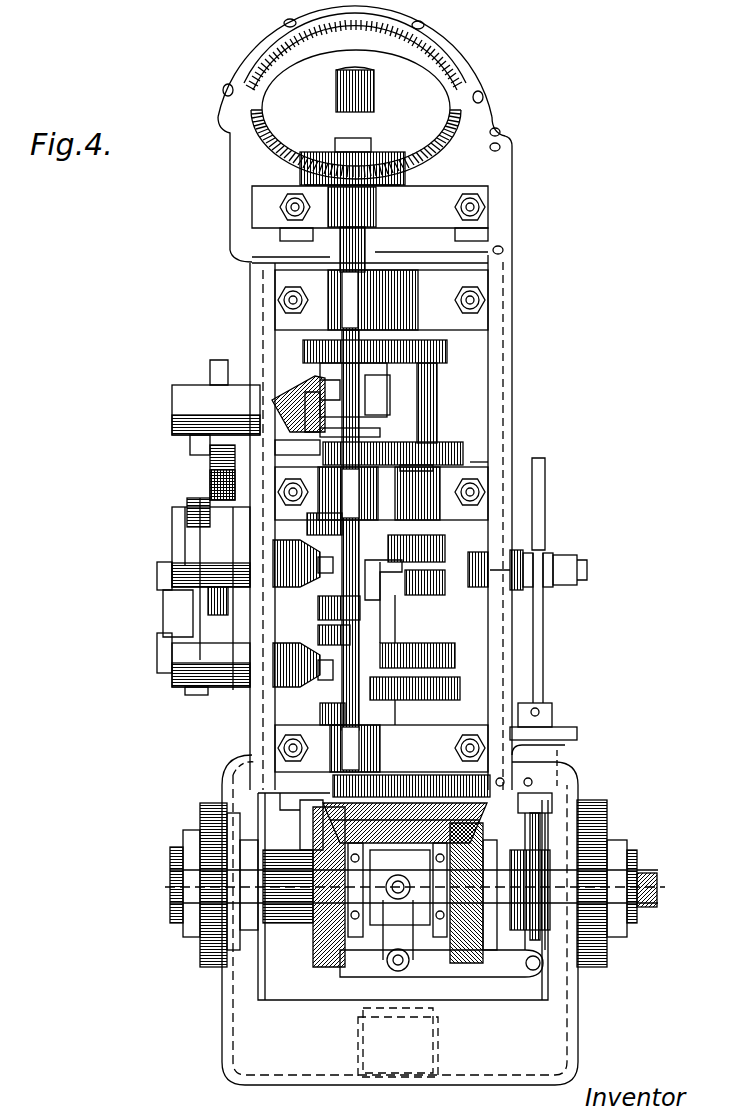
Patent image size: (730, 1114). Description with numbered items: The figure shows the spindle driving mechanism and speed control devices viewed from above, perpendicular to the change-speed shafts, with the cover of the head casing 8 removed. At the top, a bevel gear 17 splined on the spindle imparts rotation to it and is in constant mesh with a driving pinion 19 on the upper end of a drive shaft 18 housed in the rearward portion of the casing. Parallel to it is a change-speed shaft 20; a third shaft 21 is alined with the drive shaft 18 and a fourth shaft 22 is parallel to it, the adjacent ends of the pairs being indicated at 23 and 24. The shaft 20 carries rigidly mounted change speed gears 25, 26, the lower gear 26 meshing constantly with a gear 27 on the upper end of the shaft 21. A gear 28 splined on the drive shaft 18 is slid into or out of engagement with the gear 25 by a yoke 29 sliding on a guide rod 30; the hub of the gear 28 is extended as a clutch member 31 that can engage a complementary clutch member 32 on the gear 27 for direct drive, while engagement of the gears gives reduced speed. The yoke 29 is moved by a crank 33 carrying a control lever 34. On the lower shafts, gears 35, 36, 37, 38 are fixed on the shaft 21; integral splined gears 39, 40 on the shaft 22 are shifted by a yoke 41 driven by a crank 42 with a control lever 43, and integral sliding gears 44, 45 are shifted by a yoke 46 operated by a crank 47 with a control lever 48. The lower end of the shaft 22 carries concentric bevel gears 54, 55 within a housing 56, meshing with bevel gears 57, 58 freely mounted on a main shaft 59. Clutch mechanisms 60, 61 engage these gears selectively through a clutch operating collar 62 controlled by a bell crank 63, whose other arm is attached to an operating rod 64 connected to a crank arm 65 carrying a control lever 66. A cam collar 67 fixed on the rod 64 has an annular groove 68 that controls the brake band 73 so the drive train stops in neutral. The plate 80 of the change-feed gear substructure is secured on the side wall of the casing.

The head casing 8 is at (508, 296).
The bevel gear 17 is at (417, 89).
The drive shaft 18 is at (340, 248).
The driving pinion 19 is at (300, 168).
The change-speed shaft 20 is at (420, 395).
The third shaft 21 is at (300, 462).
The fourth shaft 22 is at (430, 637).
The adjacent shaft ends 23 is at (372, 412).
The adjacent shaft ends 24 is at (477, 464).
The change speed gear 25 is at (440, 370).
The change speed gear 26 is at (463, 444).
The gear 27 is at (300, 450).
The gear 28 is at (320, 352).
The yoke 29 is at (313, 370).
The guide rod 30 is at (320, 345).
The clutch member 31 is at (437, 400).
The complementary clutch member 32 is at (345, 430).
The crank 33 is at (298, 384).
The control lever 34 is at (173, 420).
The gear 35 is at (318, 522).
The gear 36 is at (318, 607).
The gear 37 is at (318, 633).
The gear 38 is at (320, 712).
The gear 39 is at (442, 546).
The gear 40 is at (446, 582).
The shifting yoke 41 is at (370, 566).
The crank 42 is at (300, 540).
The control lever 43 is at (172, 553).
The sliding gear 44 is at (453, 650).
The sliding gear 45 is at (443, 684).
The yoke 46 is at (317, 680).
The crank 47 is at (282, 688).
The control lever 48 is at (177, 682).
The bevel gear 54 is at (323, 810).
The bevel gear 55 is at (333, 828).
The housing 56 is at (579, 1042).
The bevel gear 57 is at (317, 965).
The bevel gear 58 is at (473, 960).
The main shaft 59 is at (658, 887).
The clutch mechanism 60 is at (358, 937).
The clutch mechanism 61 is at (447, 960).
The clutch operating collar 62 is at (375, 960).
The bell crank 63 is at (427, 968).
The operating rod 64 is at (537, 843).
The crank arm 65 is at (548, 560).
The control lever 66 is at (548, 487).
The cam collar 67 is at (550, 810).
The annular groove 68 is at (573, 776).
The brake band 73 is at (350, 784).
The plate 80 is at (210, 483).